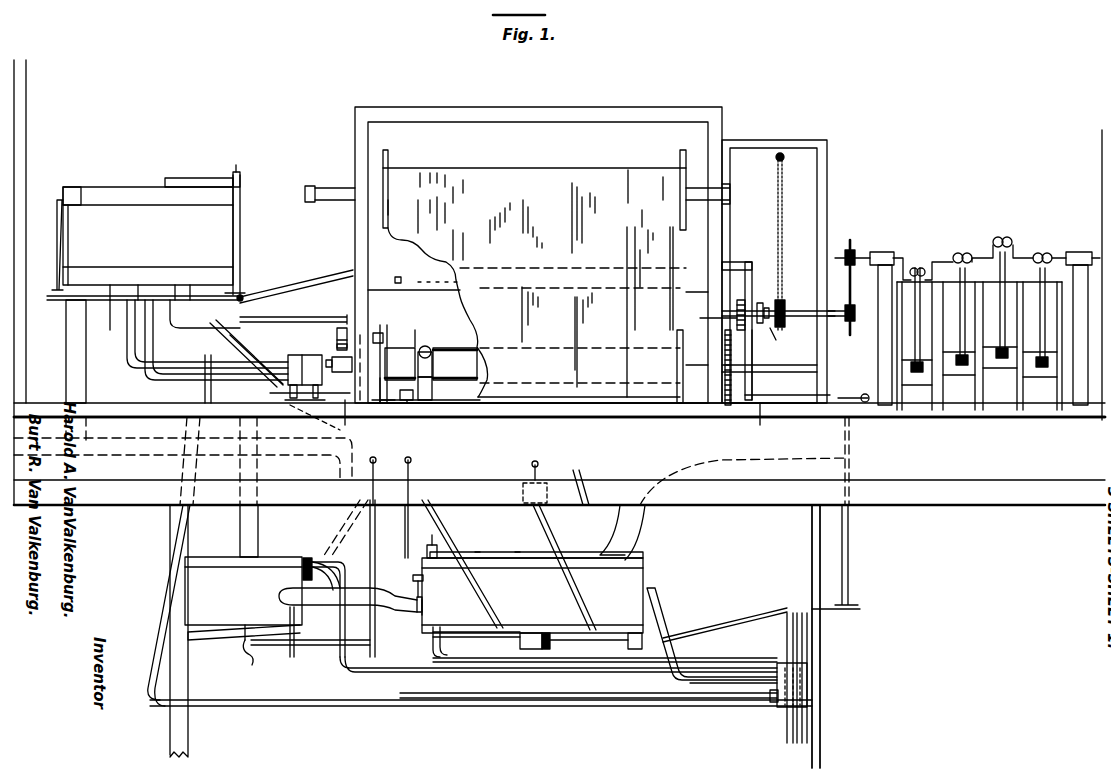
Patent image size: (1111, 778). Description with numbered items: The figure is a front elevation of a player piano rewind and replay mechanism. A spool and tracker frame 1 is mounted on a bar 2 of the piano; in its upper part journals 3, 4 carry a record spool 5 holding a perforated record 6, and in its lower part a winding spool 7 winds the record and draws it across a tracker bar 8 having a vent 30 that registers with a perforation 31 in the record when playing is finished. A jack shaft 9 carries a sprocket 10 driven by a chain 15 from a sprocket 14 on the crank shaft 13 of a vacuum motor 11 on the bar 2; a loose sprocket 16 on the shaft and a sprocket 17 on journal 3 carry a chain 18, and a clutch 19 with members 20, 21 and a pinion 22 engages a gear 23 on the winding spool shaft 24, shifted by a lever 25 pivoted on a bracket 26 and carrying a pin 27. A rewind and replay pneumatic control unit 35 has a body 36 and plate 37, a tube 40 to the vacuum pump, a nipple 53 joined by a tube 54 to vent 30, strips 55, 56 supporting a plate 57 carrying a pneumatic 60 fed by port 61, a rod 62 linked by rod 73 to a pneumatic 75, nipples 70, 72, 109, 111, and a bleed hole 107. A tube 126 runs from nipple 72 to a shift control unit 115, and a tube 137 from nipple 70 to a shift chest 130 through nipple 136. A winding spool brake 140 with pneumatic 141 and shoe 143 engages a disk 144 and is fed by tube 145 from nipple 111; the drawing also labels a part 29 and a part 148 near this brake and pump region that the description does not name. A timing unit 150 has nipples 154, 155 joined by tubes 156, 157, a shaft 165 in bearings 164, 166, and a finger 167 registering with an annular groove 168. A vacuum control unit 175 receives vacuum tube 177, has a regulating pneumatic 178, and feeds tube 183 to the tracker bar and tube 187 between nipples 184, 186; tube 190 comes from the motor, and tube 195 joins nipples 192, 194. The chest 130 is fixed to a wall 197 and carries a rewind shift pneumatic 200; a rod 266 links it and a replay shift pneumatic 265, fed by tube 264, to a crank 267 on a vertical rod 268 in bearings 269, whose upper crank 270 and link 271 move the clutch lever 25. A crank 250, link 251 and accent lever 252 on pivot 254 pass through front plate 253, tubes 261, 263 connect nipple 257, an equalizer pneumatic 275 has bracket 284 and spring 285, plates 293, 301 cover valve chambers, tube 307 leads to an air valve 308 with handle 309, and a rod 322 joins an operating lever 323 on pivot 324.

The spool and tracker frame 1 is at (695, 120).
The bar 2 is at (559, 438).
The journal 3 is at (752, 195).
The journal 4 is at (385, 175).
The record spool 5 is at (534, 272).
The perforated record 6 is at (683, 250).
The winding spool 7 is at (457, 400).
The tracker bar 8 is at (436, 344).
The jack shaft 9 is at (797, 311).
The sprocket 10 is at (853, 325).
The vacuum motor 11 is at (983, 331).
The crank shaft 13 is at (880, 252).
The sprocket 14 is at (853, 245).
The chain 15 is at (854, 275).
The sprocket 16 is at (788, 330).
The sprocket 17 is at (784, 163).
The chain 18 is at (784, 230).
The clutch 19 is at (758, 322).
The clutch member 20 is at (778, 343).
The clutch member 21 is at (760, 303).
The pinion 22 is at (732, 305).
The gear 23 is at (728, 405).
The winding spool shaft 24 is at (780, 372).
The lever 25 is at (752, 385).
The bracket 26 is at (740, 262).
The pin 27 is at (708, 320).
The rod 29 is at (414, 380).
The vent 30 is at (527, 312).
The perforation 31 is at (398, 205).
The rewind and replay pneumatic control unit 35 is at (143, 269).
The body 36 is at (222, 252).
The plate 37 is at (108, 302).
The tube 40 is at (70, 300).
The nipple 53 is at (204, 325).
The tube 54 is at (290, 290).
The strip 55 is at (240, 195).
The strip 56 is at (73, 190).
The plate 57 is at (118, 187).
The pneumatic 60 is at (199, 172).
The port 61 is at (248, 285).
The rod 62 is at (240, 220).
The nipple 70 is at (256, 354).
The nipple 72 is at (200, 284).
The rod 73 is at (120, 310).
The pneumatic 75 is at (55, 250).
The bleed hole 107 is at (142, 280).
The nipple 109 is at (108, 280).
The nipple 111 is at (178, 283).
The rewind and replay pneumatic shift control unit 115 is at (532, 595).
The tube 126 is at (458, 540).
The rewind and replay shift pneumatic chest 130 is at (800, 680).
The nipple 136 is at (774, 703).
The tube 137 is at (290, 702).
The winding spool brake 140 is at (326, 345).
The pneumatic 141 is at (337, 332).
The brake shoe 143 is at (370, 325).
The disk 144 is at (379, 408).
The tube 145 is at (315, 317).
The rod 148 is at (392, 320).
The pneumatic timing and replay control unit 150 is at (342, 374).
The nipple 154 is at (288, 360).
The nipple 155 is at (290, 400).
The tube 156 is at (231, 353).
The tube 157 is at (165, 378).
The bearing 164 is at (315, 425).
The shaft 165 is at (354, 418).
The bearing 166 is at (388, 471).
The finger 167 is at (450, 348).
The annular groove 168 is at (439, 389).
The vacuum control unit 175 is at (243, 591).
The vacuum tube 177 is at (258, 524).
The regulating pneumatic 178 is at (230, 640).
The vacuum tube 183 is at (333, 520).
The nipple 184 is at (290, 650).
The nipple 186 is at (415, 612).
The vacuum tube 187 is at (390, 600).
The vacuum tube 190 is at (640, 533).
The nipple 192 is at (628, 645).
The nipple 194 is at (770, 700).
The tube 195 is at (660, 665).
The wall 197 is at (822, 636).
The rewind shift pneumatic 200 is at (790, 643).
The crank 250 is at (260, 667).
The link 251 is at (333, 648).
The accent lever 252 is at (343, 548).
The front plate 253 is at (332, 520).
The pivot 254 is at (387, 578).
The nipple 257 is at (305, 557).
The tube 261 is at (440, 672).
The tube 263 is at (540, 662).
The tube 264 is at (700, 684).
The replay shift pneumatic 265 is at (665, 615).
The rod 266 is at (745, 628).
The crank 267 is at (858, 605).
The vertical rod 268 is at (848, 555).
The bearing 269 is at (850, 462).
The crank 270 is at (862, 395).
The link 271 is at (761, 423).
The equalizer pneumatic 275 is at (452, 625).
The bracket 284 is at (522, 633).
The spring 285 is at (561, 642).
The plate 293 is at (500, 556).
The plate 301 is at (427, 539).
The tube 307 is at (565, 540).
The air valve 308 is at (572, 475).
The handle 309 is at (529, 472).
The rod 322 is at (433, 586).
The operating lever 323 is at (414, 522).
The pivot 324 is at (418, 493).